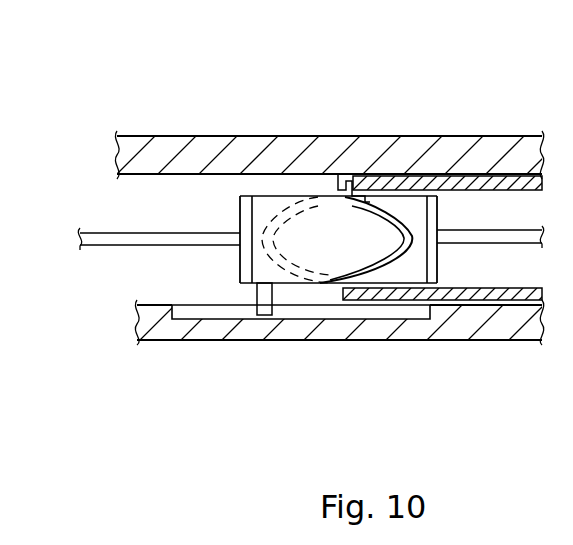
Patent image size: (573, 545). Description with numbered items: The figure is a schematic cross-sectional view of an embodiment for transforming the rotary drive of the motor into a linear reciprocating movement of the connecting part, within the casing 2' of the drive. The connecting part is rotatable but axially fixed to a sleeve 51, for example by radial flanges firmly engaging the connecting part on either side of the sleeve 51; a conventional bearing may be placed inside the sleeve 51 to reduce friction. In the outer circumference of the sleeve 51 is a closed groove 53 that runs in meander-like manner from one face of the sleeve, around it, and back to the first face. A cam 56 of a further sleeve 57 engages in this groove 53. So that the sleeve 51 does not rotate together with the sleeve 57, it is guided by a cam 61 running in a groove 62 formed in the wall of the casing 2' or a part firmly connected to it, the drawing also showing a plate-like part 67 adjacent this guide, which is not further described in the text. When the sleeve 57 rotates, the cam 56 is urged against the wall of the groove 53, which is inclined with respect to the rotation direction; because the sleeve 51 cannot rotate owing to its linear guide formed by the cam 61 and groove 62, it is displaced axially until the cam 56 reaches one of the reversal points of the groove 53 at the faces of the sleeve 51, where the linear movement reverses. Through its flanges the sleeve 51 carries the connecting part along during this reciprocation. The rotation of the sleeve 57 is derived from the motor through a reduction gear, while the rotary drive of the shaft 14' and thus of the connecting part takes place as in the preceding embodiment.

The casing 2' is at (320, 271).
The shaft 14' is at (284, 286).
The sleeve 51 is at (266, 196).
The groove 53 is at (378, 278).
The cam 56 is at (342, 176).
The further sleeve 57 is at (395, 180).
The cam 61 is at (262, 298).
The groove 62 is at (300, 310).
The support plate 67 is at (412, 328).